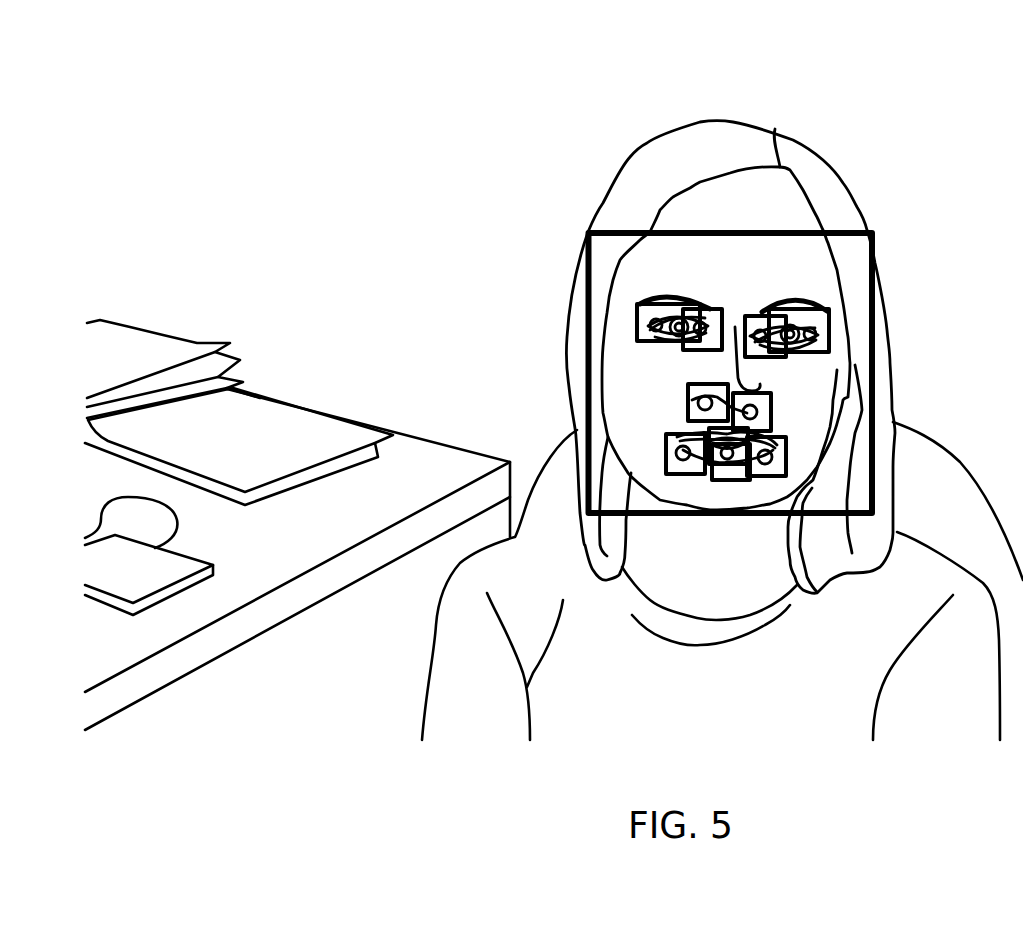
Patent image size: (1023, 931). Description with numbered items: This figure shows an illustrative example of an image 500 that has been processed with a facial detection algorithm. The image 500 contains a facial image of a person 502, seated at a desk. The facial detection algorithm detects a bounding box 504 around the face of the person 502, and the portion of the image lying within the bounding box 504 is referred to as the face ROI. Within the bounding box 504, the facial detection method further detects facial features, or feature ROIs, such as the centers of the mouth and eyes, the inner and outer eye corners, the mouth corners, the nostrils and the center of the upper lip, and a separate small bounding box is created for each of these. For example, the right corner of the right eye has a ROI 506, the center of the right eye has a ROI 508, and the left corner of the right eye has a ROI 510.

The image 500 is at (139, 100).
The person 502 is at (808, 132).
The bounding box 504 is at (813, 229).
The ROI 506 is at (637, 291).
The ROI 508 is at (690, 297).
The ROI 510 is at (723, 312).